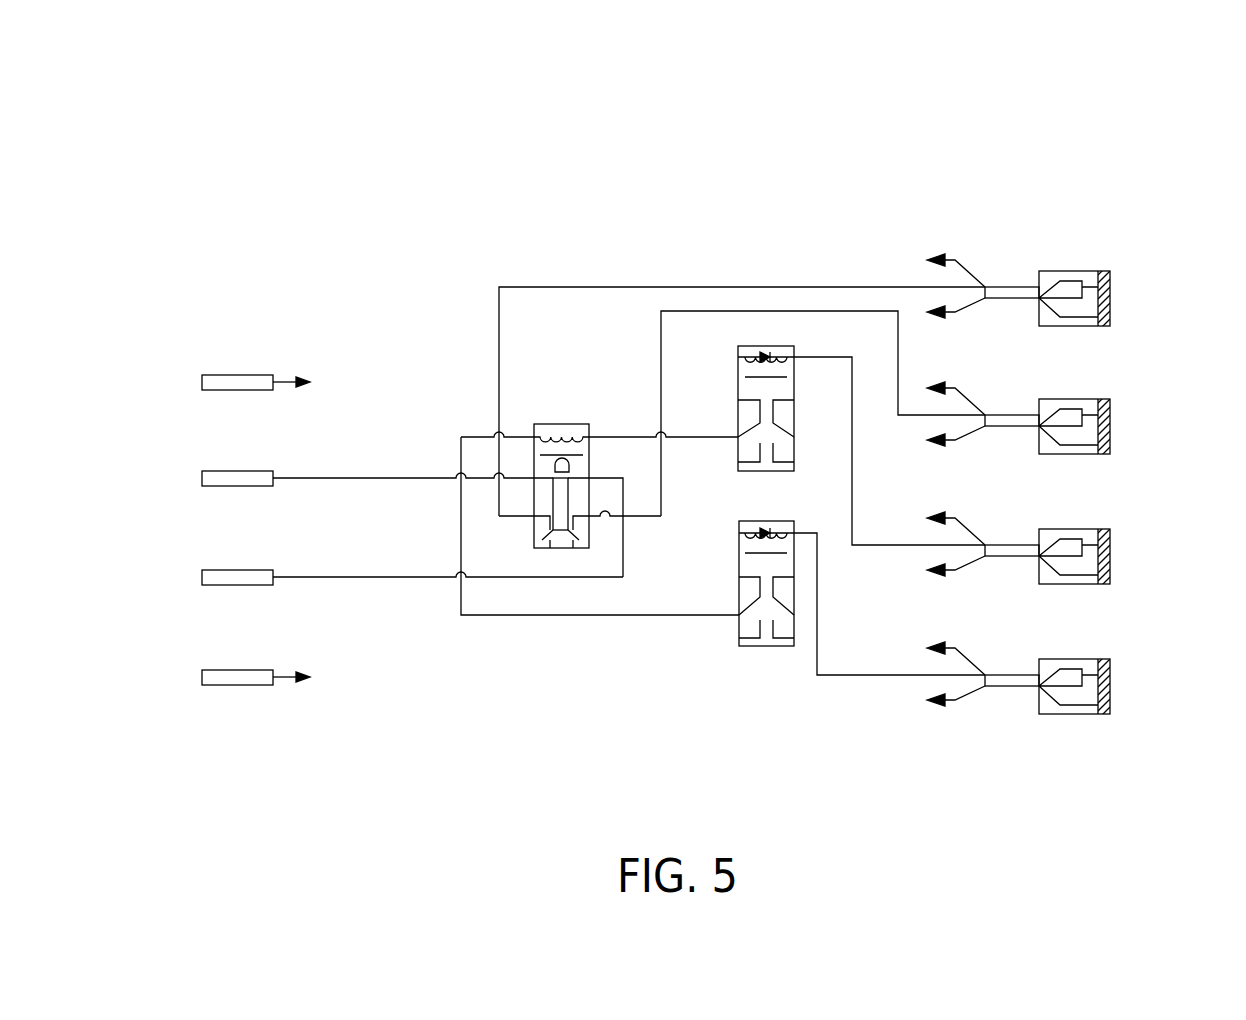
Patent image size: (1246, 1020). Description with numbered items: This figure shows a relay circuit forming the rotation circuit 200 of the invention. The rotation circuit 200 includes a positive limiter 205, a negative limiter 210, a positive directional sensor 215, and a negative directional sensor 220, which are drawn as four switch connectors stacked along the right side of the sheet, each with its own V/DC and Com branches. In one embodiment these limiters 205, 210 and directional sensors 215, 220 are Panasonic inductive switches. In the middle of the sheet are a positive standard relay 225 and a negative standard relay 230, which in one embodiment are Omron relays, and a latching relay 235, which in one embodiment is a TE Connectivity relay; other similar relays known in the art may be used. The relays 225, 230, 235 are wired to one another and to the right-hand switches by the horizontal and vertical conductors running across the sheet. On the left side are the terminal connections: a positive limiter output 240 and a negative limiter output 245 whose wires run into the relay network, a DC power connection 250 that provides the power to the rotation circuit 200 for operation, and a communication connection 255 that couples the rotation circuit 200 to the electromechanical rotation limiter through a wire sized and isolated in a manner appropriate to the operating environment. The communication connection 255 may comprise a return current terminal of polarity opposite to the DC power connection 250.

The rotation circuit 200 is at (1040, 133).
The positive limiter 205 is at (1110, 300).
The negative limiter 210 is at (1110, 428).
The positive directional sensor 215 is at (1110, 558).
The negative directional sensor 220 is at (1110, 688).
The positive standard relay 225 is at (767, 346).
The negative standard relay 230 is at (768, 646).
The latching relay 235 is at (565, 424).
The positive limiter output 240 is at (202, 479).
The negative limiter output 245 is at (202, 579).
The DC power connection 250 is at (202, 382).
The communication connection 255 is at (202, 679).